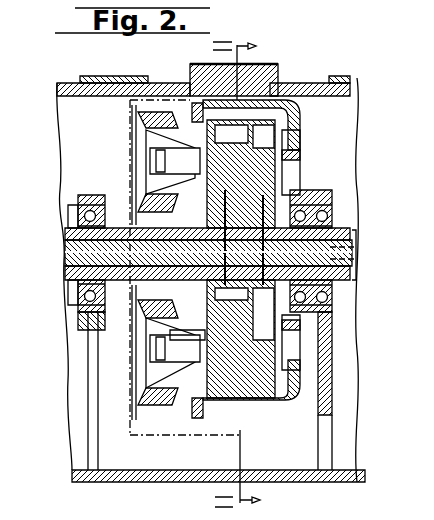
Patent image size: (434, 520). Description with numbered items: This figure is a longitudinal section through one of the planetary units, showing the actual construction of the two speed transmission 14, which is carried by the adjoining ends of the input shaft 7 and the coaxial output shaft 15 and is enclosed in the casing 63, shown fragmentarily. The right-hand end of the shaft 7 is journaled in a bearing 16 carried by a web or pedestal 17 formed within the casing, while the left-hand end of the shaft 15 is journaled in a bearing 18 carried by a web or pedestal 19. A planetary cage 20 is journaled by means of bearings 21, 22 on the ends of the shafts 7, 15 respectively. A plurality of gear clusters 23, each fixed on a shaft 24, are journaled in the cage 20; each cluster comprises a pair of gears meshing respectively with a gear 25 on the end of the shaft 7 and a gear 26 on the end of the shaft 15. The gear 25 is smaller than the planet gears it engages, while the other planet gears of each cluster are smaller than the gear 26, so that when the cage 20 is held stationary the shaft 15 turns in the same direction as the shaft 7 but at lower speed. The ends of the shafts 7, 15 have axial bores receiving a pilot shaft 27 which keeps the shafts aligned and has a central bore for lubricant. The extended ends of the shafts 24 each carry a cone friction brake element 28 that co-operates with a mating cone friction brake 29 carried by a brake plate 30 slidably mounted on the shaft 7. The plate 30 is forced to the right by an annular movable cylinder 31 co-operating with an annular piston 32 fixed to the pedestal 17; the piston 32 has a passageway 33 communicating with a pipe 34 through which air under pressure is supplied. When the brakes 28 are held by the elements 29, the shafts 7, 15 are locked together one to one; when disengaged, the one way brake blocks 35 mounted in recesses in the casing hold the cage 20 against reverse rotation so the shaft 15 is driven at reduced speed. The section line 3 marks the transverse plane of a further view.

The section line 3- 3 is at (247, 273).
The shaft 7 is at (65, 234).
The two speed transmission 14 is at (309, 134).
The output shaft 15 is at (353, 235).
The bearing 16 is at (78, 296).
The web or pedestal 17 is at (78, 332).
The bearing 18 is at (335, 300).
The web or pedestal 19 is at (330, 352).
The planetary cage 20 is at (286, 100).
The bearing 21 is at (178, 318).
The bearing 22 is at (309, 205).
The gear cluster 23 is at (301, 120).
The shaft 24 is at (192, 126).
The gear 25 is at (241, 259).
The gear 26 is at (250, 312).
The pilot shaft 27 is at (75, 257).
The cone friction brake element 28 is at (152, 153).
The cone friction brake 29 is at (150, 136).
The brake plate 30 is at (148, 126).
The annular movable cylinder 31 is at (118, 200).
The annular piston 32 is at (75, 239).
The passageway 33 is at (127, 318).
The pipe 34 is at (140, 378).
The one way brake block 35 is at (270, 72).
The casing 63 is at (58, 95).